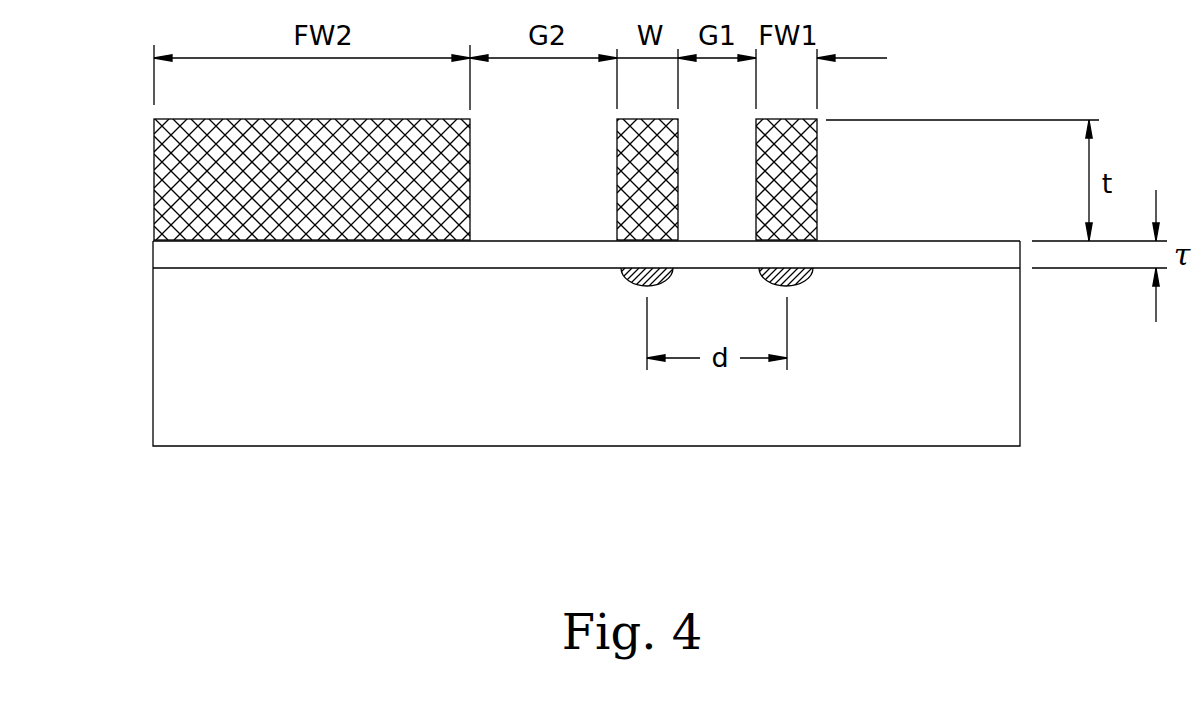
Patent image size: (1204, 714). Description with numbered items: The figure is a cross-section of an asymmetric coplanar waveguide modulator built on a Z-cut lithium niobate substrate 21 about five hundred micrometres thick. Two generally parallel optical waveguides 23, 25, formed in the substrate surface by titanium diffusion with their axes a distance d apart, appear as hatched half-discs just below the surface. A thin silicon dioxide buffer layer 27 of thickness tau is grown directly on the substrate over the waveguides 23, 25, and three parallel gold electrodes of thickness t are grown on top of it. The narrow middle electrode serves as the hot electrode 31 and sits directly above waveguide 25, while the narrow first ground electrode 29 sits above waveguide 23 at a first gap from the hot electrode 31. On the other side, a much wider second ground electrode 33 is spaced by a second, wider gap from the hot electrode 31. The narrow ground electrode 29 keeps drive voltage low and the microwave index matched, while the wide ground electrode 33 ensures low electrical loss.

The substrate 21 is at (915, 428).
The parallel waveguide 23 is at (810, 286).
The parallel waveguide 25 is at (632, 286).
The buffer layer 27 is at (957, 260).
The first ground electrode 29 is at (808, 157).
The hot electrode 31 is at (633, 223).
The second ground electrode 33 is at (438, 175).